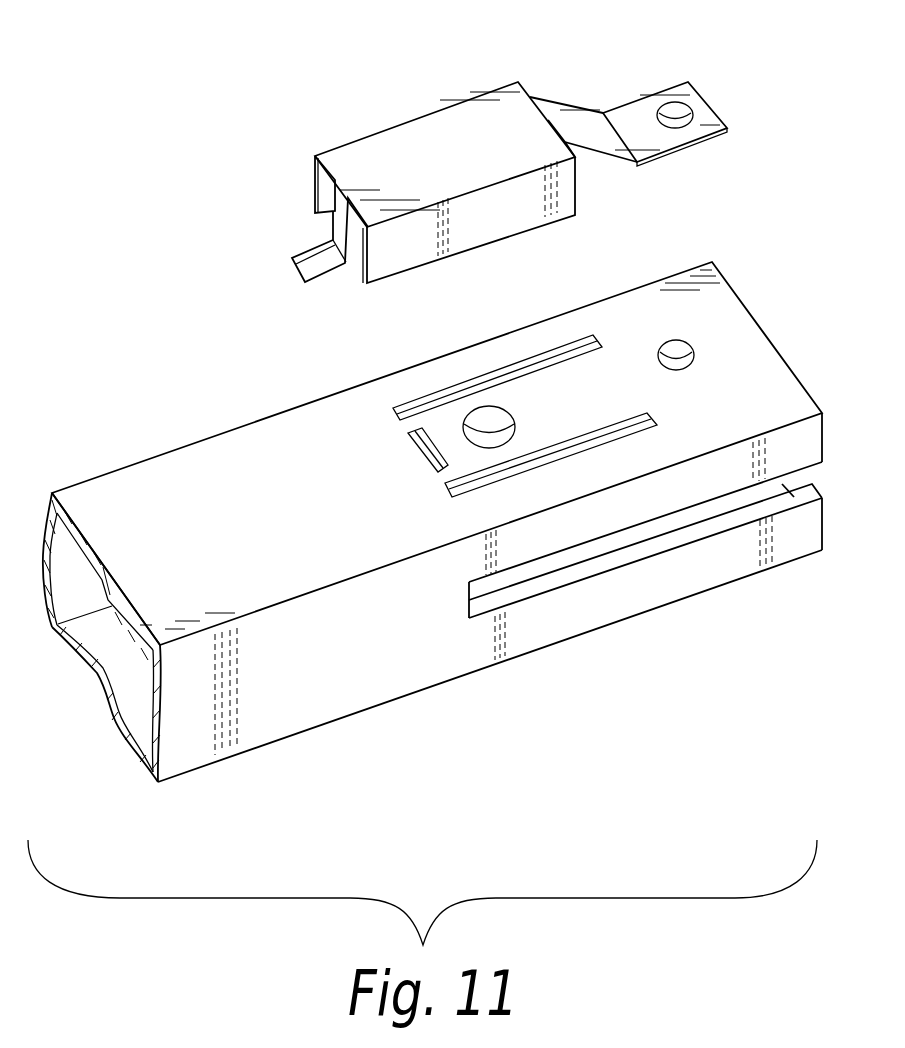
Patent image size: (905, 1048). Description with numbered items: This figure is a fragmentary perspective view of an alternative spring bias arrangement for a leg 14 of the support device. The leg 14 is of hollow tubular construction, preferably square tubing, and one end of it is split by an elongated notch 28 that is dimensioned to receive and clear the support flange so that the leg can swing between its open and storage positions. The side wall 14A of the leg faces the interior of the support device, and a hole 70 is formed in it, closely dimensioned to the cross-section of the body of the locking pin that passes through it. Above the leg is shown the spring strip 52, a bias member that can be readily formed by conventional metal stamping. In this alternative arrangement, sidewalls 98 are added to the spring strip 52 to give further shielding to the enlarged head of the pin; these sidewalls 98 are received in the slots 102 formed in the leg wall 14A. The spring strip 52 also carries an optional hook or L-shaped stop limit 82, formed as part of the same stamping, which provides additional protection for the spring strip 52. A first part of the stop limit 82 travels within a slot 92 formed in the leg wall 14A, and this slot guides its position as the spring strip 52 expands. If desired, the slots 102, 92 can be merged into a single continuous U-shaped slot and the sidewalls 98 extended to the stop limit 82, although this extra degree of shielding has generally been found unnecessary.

The leg 14 is at (432, 569).
The side wall 14A is at (130, 502).
The notch 28 is at (695, 540).
The spring strip 52 is at (468, 152).
The hole 70 is at (487, 430).
The stop limit 82 is at (338, 236).
The slot 92 is at (418, 447).
The sidewalls 98 is at (520, 205).
The slots 102 is at (470, 387).